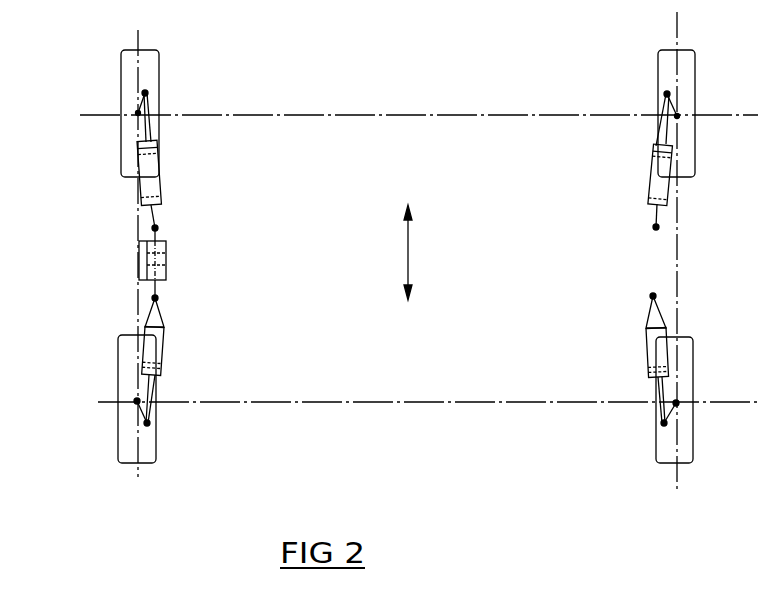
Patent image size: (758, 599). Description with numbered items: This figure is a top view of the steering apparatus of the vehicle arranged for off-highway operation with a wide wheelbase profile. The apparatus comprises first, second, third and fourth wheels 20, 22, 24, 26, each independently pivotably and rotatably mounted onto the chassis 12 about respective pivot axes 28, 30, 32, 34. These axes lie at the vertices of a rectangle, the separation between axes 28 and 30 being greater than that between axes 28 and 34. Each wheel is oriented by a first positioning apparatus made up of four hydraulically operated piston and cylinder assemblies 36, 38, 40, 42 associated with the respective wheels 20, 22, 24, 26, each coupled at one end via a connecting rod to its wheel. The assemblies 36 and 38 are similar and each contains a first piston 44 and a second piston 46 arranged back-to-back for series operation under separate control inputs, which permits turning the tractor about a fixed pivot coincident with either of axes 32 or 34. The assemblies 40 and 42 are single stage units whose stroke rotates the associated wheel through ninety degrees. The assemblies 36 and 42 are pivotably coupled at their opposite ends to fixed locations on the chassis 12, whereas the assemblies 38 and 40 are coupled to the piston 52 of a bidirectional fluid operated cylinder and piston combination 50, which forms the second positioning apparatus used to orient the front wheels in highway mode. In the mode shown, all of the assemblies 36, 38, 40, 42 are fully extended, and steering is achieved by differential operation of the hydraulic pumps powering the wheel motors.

The chassis 12 is at (648, 261).
The first wheel 20 is at (687, 70).
The second wheel 22 is at (148, 77).
The third wheel 24 is at (128, 349).
The fourth wheel 26 is at (690, 358).
The pivot axis 28 is at (677, 116).
The pivot axis 30 is at (138, 113).
The pivot axis 32 is at (137, 401).
The pivot axis 34 is at (676, 403).
The piston and cylinder assembly 36 is at (649, 182).
The piston and cylinder assembly 38 is at (160, 173).
The piston and cylinder assembly 40 is at (163, 344).
The piston and cylinder assembly 42 is at (647, 347).
The first piston 44 is at (150, 132).
The second piston 46 is at (153, 212).
The bidirectional fluid operated cylinder and piston combination 50 is at (184, 256).
The piston 52 is at (165, 272).